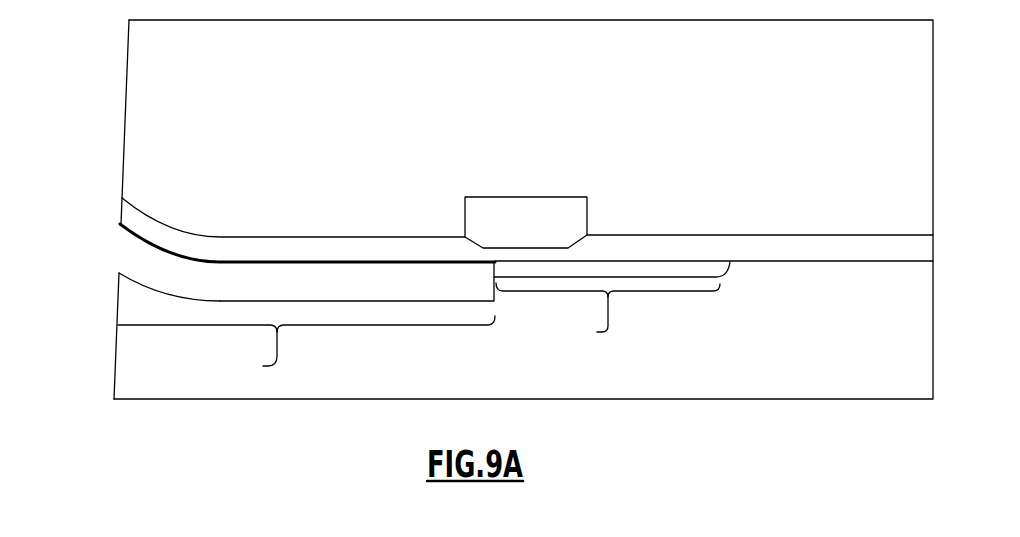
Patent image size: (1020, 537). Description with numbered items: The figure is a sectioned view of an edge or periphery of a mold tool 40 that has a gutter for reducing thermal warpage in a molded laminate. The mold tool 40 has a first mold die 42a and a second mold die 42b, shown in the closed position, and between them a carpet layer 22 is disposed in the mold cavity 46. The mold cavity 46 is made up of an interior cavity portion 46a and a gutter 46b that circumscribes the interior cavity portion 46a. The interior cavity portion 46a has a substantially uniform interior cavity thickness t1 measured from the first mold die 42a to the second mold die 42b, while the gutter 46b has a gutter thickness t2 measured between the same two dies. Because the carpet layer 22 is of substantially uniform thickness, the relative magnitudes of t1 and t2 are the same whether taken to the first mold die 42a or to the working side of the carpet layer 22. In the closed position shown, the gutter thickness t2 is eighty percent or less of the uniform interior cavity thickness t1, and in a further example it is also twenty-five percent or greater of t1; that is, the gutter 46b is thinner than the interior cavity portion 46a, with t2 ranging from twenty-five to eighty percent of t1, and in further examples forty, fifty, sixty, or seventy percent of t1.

The mold tool 40 is at (103, 361).
The first mold die 42a is at (135, 130).
The second mold die 42b is at (185, 383).
The carpet layer 22 is at (133, 221).
The mold cavity 46 is at (157, 271).
The interior cavity portion 46a is at (306, 323).
The gutter 46b is at (612, 304).
The uniform interior cavity thickness t1 is at (293, 200).
The gutter thickness t2 is at (663, 198).